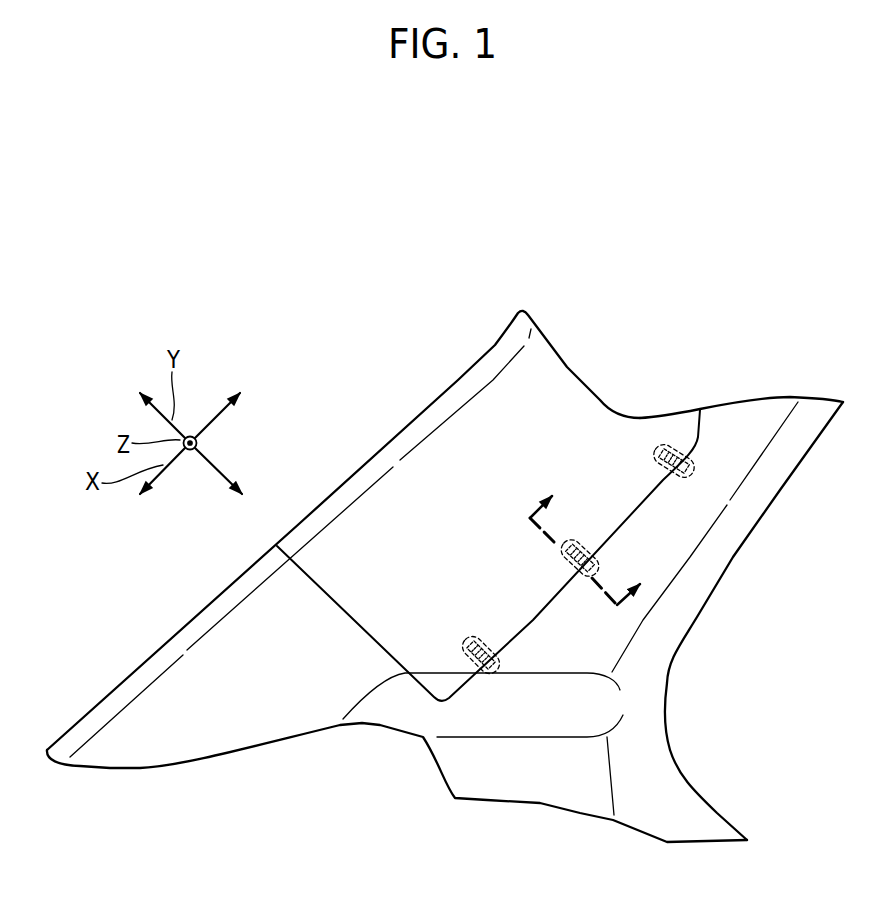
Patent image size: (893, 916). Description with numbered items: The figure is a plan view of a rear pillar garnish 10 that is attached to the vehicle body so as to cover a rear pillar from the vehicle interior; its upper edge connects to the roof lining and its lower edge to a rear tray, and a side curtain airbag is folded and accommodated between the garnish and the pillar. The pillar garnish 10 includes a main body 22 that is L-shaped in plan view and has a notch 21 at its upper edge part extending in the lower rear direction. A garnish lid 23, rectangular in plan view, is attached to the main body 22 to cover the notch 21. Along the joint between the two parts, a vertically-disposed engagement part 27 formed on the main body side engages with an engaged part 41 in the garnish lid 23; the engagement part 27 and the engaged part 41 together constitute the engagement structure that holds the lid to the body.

The rear pillar garnish 10 is at (704, 329).
The notch 21 is at (548, 613).
The main body 22 is at (780, 392).
The garnish lid 23 is at (573, 367).
The engagement part 27 is at (614, 465).
The engaged part 41 is at (586, 528).